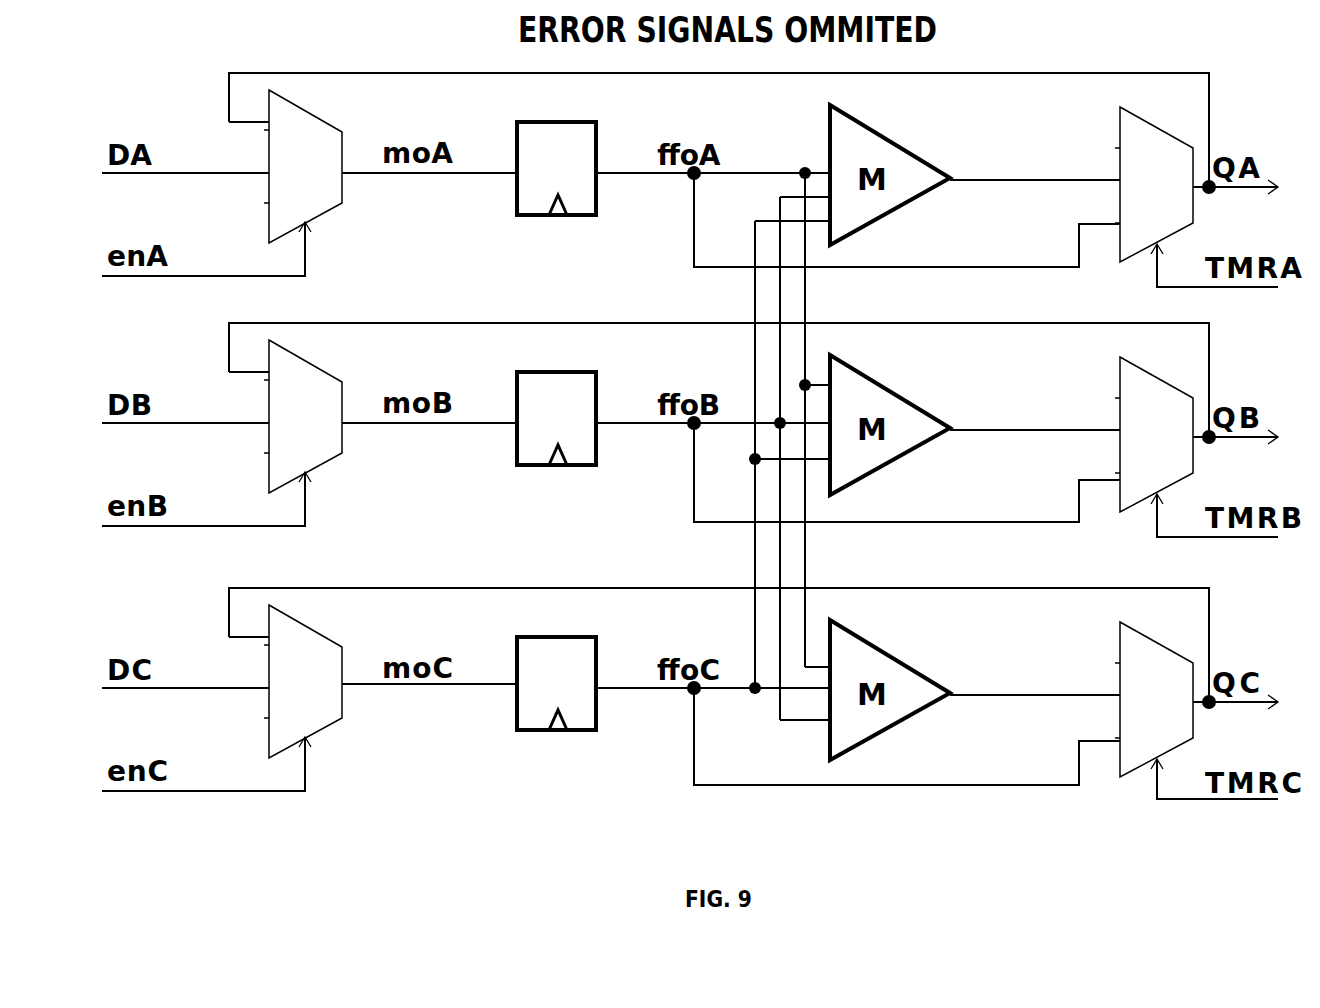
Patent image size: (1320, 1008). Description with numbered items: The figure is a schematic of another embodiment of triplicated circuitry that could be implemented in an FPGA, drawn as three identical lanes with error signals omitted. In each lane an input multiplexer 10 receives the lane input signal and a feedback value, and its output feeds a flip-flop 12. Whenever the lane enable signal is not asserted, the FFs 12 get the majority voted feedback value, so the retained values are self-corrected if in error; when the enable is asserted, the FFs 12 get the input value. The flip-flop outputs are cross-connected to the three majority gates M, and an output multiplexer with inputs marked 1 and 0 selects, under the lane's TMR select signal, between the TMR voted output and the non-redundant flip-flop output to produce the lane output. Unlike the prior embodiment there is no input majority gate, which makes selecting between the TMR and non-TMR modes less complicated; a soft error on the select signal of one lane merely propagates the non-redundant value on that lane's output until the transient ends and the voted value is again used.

The input multiplexer 10 is at (303, 424).
The FF 12 is at (556, 426).
The output multiplexer input 1 is at (1071, 442).
The output multiplexer input 0 is at (928, 479).